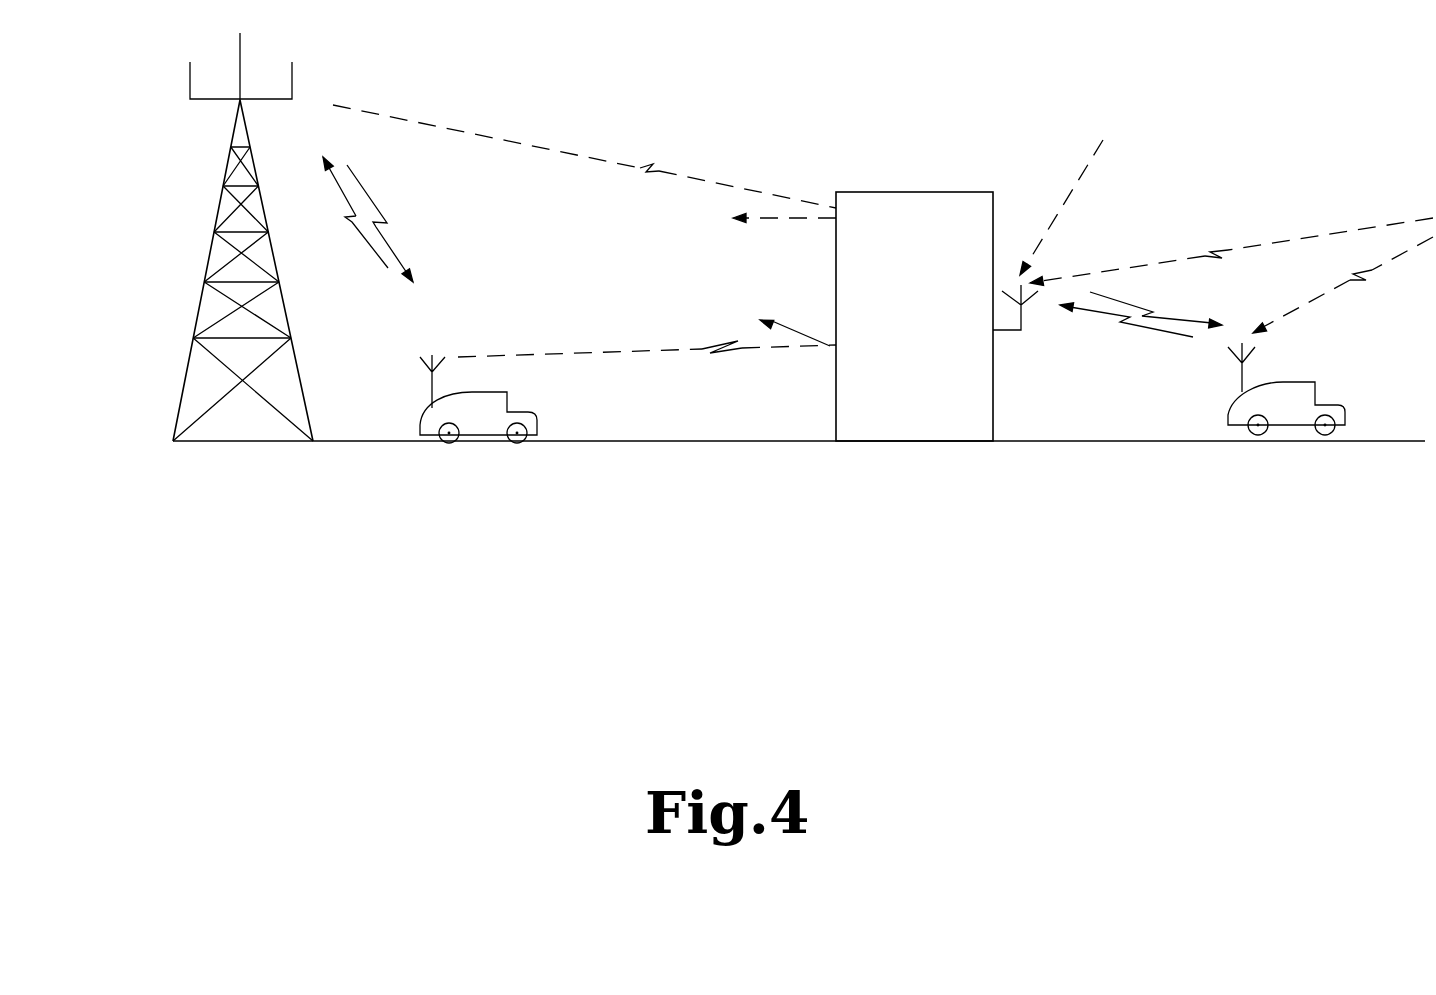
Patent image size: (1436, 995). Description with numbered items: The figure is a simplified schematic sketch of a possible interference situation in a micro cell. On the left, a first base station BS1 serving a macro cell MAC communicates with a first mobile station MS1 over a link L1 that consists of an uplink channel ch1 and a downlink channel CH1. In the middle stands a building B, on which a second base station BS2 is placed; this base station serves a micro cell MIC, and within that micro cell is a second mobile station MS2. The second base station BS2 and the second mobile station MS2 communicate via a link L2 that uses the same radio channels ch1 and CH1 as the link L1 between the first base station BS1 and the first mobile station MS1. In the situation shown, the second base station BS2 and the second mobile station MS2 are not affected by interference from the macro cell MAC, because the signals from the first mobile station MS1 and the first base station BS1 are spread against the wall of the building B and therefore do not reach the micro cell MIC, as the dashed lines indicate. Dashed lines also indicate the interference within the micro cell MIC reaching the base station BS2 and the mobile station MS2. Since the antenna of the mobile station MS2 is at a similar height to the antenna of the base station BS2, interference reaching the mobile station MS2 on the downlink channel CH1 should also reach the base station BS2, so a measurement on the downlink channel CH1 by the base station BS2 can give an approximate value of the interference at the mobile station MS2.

The first base station BS1 is at (173, 441).
The second base station BS2 is at (1028, 323).
The first mobile station MS1 is at (432, 442).
The second mobile station MS2 is at (1230, 425).
The building B is at (943, 437).
The link L1 is at (356, 220).
The link L2 is at (1143, 315).
The downlink channel CH1 is at (883, 232).
The uplink channel ch1 is at (683, 247).
The macro cell MAC is at (662, 405).
The micro cell MIC is at (1080, 407).